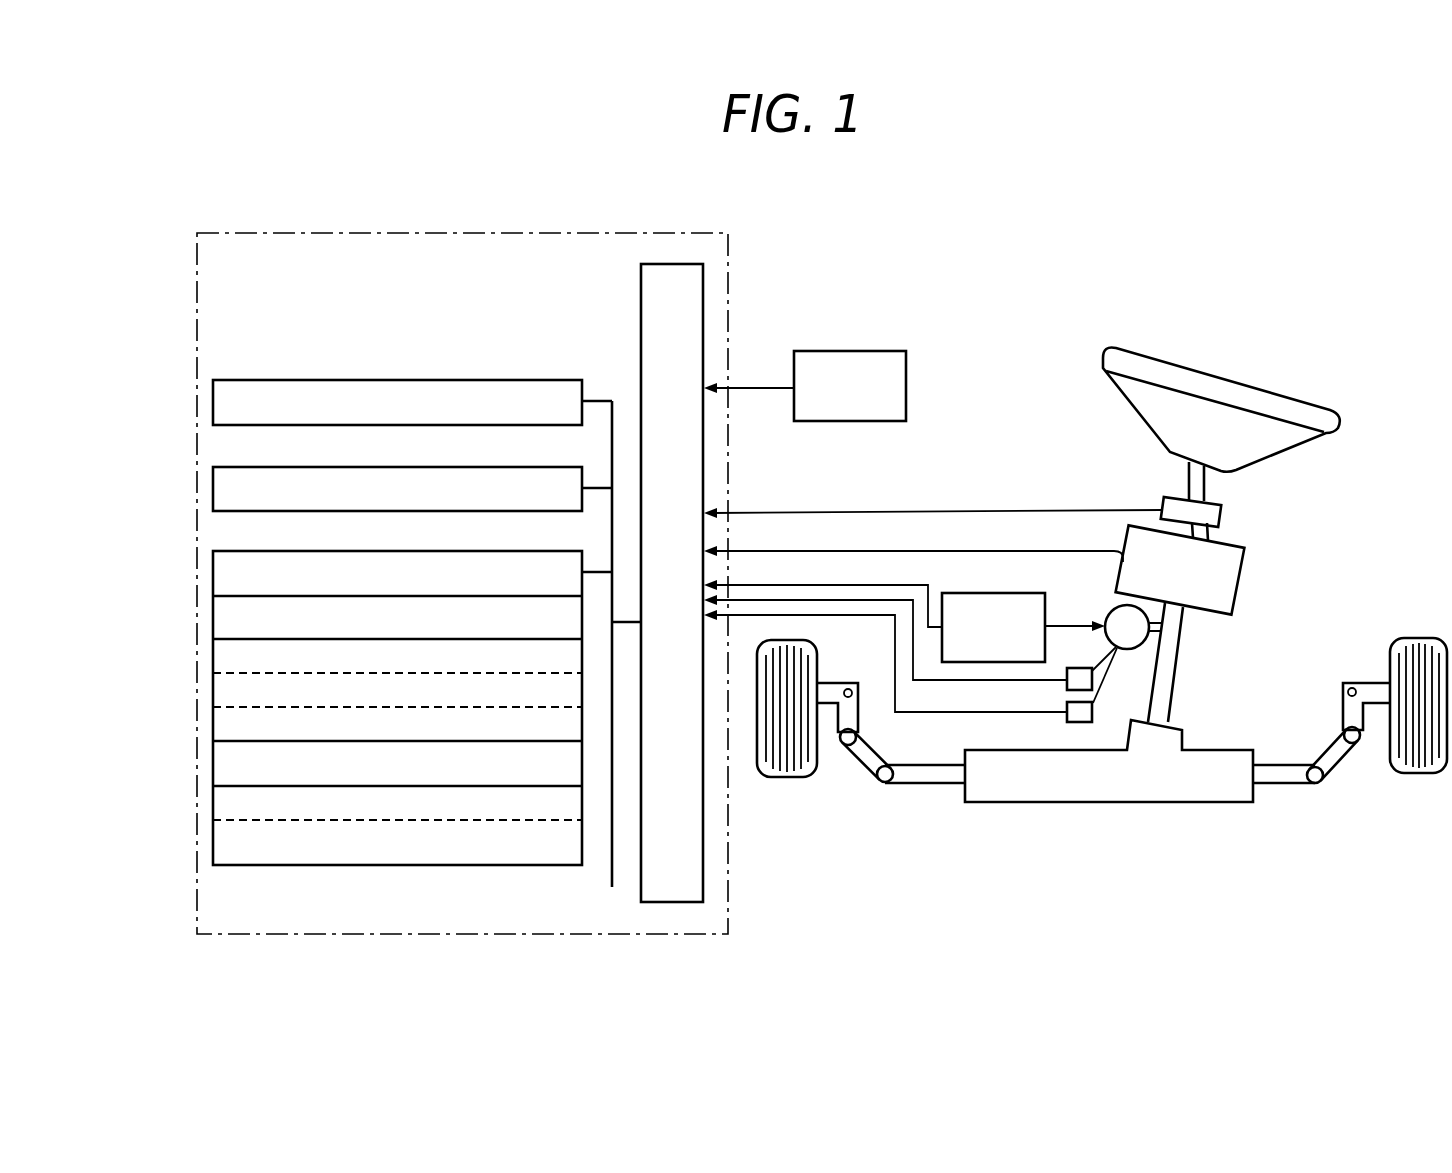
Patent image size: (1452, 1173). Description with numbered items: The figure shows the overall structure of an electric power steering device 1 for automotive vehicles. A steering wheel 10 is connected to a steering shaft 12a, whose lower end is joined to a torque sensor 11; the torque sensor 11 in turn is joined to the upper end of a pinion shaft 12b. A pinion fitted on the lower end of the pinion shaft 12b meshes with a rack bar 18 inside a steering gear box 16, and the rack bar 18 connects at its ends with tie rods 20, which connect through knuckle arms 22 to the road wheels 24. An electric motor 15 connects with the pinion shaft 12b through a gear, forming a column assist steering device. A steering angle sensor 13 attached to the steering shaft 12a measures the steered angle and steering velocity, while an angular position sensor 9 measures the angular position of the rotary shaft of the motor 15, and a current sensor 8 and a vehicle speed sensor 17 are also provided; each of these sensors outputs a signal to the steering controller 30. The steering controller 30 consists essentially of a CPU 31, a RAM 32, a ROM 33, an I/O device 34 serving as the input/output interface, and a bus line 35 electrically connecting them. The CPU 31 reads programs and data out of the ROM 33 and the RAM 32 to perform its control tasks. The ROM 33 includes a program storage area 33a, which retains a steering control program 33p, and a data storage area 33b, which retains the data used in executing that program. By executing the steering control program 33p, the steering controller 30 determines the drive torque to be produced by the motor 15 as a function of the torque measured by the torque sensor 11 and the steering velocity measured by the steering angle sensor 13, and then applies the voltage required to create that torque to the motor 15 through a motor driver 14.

The electric power steering device 1 is at (1188, 236).
The steering controller 30 is at (528, 233).
The CPU 31 is at (538, 380).
The RAM 32 is at (538, 467).
The ROM 33 is at (368, 691).
The program storage area 33a is at (218, 619).
The steering control program 33p is at (218, 658).
The data storage area 33b is at (220, 764).
The I/O device 34 is at (641, 895).
The bus line 35 is at (612, 870).
The vehicle speed sensor 17 is at (872, 351).
The steering wheel 10 is at (1228, 386).
The steering shaft 12a is at (1192, 473).
The steering angle sensor 13 is at (1220, 517).
The torque sensor 11 is at (1243, 572).
The pinion shaft 12b is at (1163, 716).
The electric motor 15 is at (1113, 607).
The motor driver 14 is at (985, 592).
The angular position sensor 9 is at (1073, 668).
The current sensor 8 is at (1067, 722).
The steering gear box 16 is at (1125, 792).
The rack bar 18 is at (918, 783).
The tie rods 20 is at (866, 765).
The knuckle arms 22 is at (832, 685).
The road wheels 24 is at (783, 776).